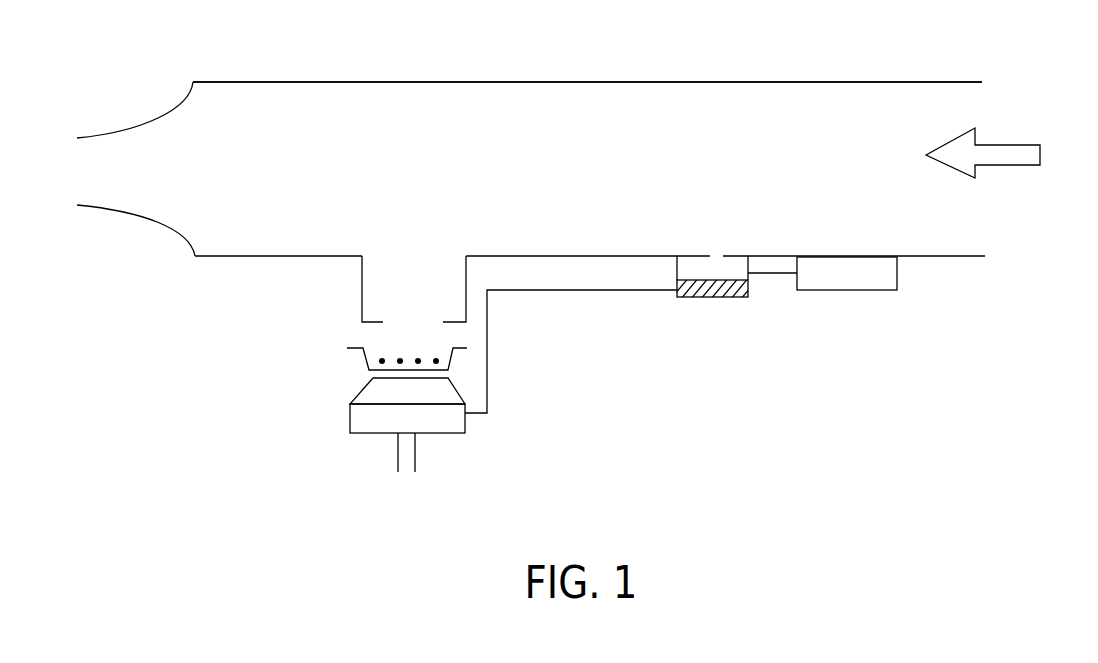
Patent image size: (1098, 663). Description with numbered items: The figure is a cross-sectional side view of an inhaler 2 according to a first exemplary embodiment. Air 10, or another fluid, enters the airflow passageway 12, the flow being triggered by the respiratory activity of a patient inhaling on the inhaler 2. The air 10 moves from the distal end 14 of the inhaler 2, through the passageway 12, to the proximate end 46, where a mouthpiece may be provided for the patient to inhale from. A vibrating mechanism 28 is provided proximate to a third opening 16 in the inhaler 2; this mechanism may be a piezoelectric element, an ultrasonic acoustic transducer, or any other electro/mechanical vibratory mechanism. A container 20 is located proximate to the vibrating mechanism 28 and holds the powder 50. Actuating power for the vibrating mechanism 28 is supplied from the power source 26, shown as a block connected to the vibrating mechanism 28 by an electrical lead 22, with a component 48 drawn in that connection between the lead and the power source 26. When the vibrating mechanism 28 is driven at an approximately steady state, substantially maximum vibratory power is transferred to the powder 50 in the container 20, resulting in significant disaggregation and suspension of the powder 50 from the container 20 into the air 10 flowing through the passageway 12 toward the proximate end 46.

The inhaler 2 is at (826, 82).
The air 10 is at (1002, 153).
The airflow passageway 12 is at (615, 103).
The distal end 14 is at (997, 108).
The third opening 16 is at (388, 298).
The container 20 is at (458, 358).
The electrical lead 22 is at (603, 291).
The power source 26 is at (840, 290).
The vibrating mechanism 28 is at (470, 425).
The proximate end 46 is at (132, 130).
The switch / control element 48 is at (725, 297).
The powder 50 is at (404, 340).